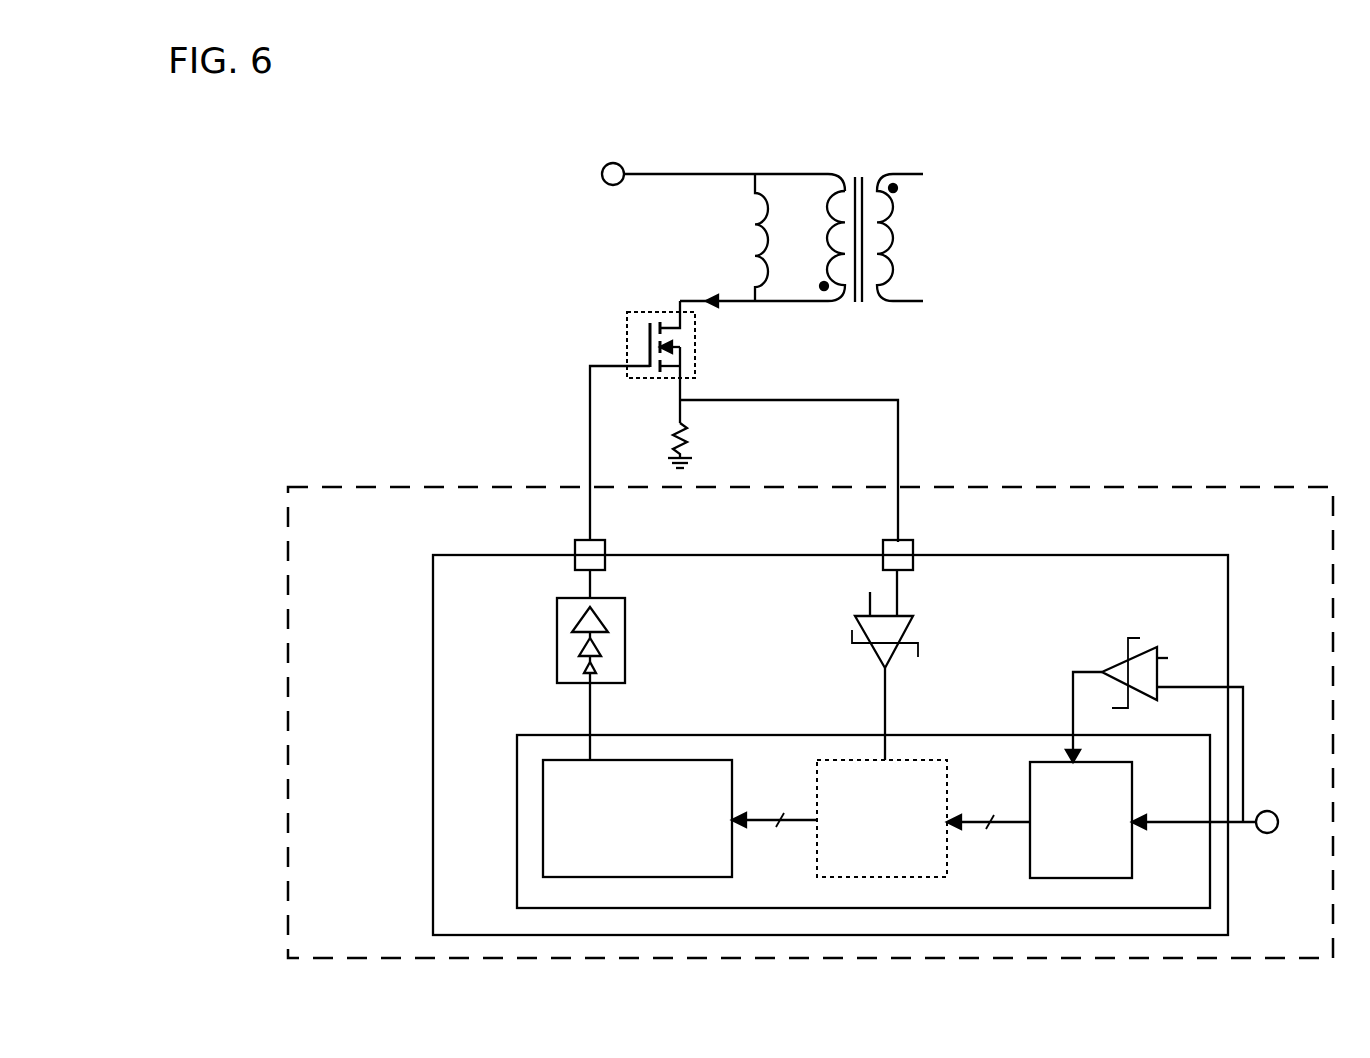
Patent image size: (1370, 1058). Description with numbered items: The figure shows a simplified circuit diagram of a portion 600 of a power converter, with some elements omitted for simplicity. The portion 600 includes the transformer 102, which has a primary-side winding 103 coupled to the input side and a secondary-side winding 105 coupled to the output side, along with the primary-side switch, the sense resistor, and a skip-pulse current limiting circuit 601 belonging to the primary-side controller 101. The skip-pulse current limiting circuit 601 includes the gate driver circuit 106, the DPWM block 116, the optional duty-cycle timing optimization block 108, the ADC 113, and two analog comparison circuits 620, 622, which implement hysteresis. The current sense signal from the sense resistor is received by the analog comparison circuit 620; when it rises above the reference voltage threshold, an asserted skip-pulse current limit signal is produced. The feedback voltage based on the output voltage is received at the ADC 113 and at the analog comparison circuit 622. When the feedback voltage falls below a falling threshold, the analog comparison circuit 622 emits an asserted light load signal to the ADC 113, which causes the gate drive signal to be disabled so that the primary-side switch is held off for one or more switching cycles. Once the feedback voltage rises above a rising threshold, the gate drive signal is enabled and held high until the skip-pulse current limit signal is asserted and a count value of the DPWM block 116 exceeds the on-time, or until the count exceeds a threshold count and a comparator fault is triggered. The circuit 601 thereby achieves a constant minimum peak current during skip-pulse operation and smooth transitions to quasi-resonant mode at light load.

The portion of the power converter 600 is at (374, 161).
The primary-side controller 101 is at (1315, 542).
The transformer 102 is at (867, 302).
The primary-side winding 103 is at (796, 172).
The secondary-side winding 105 is at (906, 172).
The gate driver circuit 106 is at (557, 640).
The duty-cycle timing optimization block 108 is at (947, 838).
The ADC 113 is at (1132, 852).
The DPWM block 116 is at (732, 838).
The skip-pulse current limiting circuit 601 is at (1202, 602).
The analog comparison circuit 620 is at (912, 619).
The analog comparison circuit 622 is at (1104, 672).